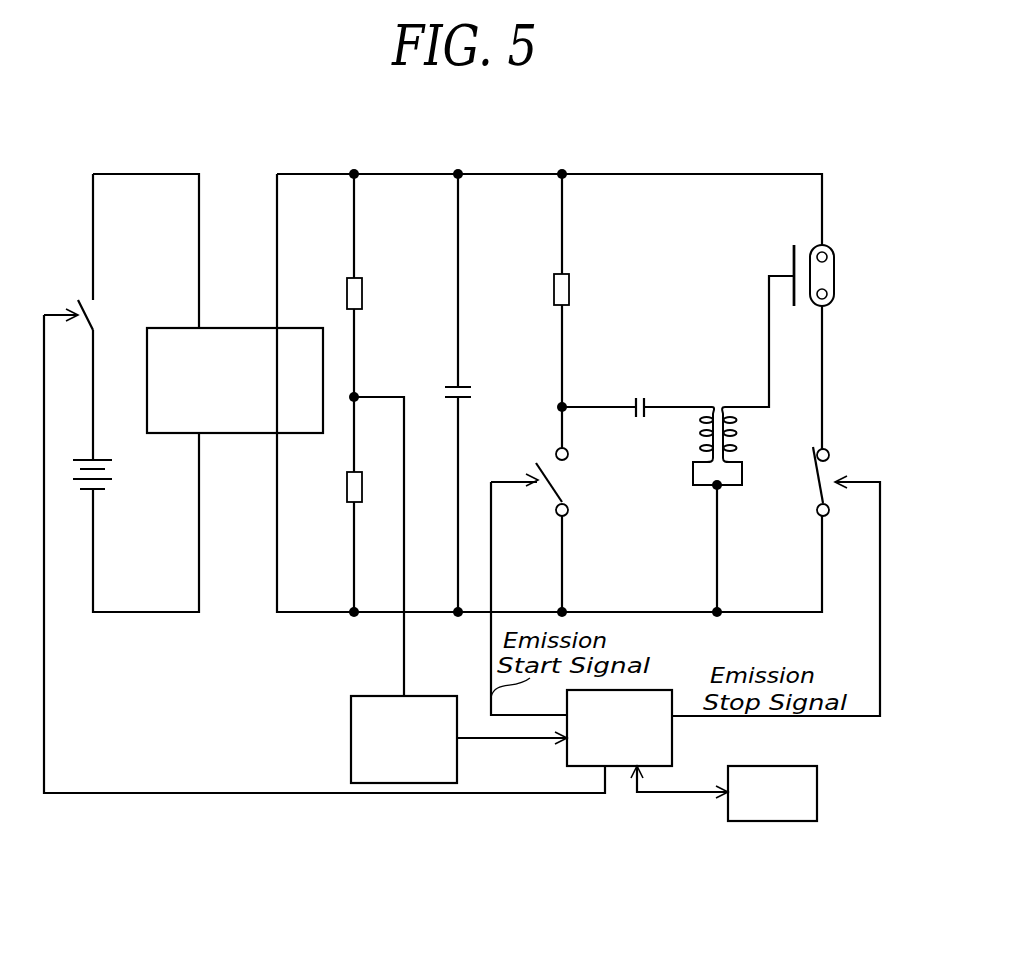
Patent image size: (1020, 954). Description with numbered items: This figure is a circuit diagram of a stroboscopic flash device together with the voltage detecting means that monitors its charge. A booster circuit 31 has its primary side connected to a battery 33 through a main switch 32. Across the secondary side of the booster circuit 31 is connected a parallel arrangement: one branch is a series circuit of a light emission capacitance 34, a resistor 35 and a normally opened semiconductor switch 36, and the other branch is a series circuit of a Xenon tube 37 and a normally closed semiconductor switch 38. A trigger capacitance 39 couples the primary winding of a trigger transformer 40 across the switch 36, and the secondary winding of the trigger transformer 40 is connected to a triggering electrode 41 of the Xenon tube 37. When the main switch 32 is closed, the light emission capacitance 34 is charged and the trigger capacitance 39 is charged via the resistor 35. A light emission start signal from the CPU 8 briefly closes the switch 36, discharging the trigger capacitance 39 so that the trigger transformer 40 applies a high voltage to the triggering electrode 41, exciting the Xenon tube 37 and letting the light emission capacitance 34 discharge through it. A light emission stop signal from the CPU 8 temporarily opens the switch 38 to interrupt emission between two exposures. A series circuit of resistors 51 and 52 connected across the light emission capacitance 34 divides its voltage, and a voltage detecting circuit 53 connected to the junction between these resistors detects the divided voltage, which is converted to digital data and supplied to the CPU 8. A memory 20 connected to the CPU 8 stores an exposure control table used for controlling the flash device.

The CPU 8 is at (657, 690).
The memory 20 is at (817, 793).
The booster circuit 31 is at (240, 327).
The main switch 32 is at (98, 313).
The battery 33 is at (110, 488).
The light emission capacitance 34 is at (470, 395).
The resistor 35 is at (569, 292).
The normally opened semiconductor switch 36 is at (563, 482).
The Xenon tube 37 is at (837, 273).
The normally closed semiconductor switch 38 is at (813, 486).
The trigger capacitance 39 is at (640, 393).
The trigger transformer 40 is at (717, 408).
The triggering electrode 41 is at (793, 257).
The resistor 51 is at (362, 296).
The resistor 52 is at (347, 490).
The voltage detecting circuit 53 is at (377, 695).